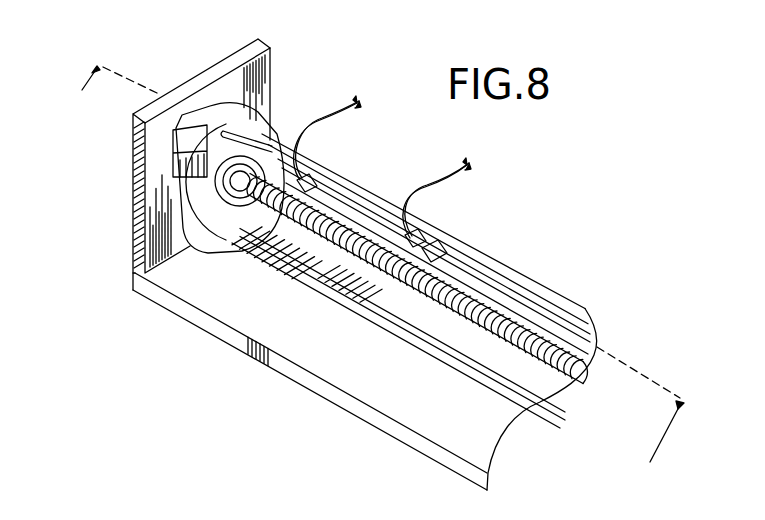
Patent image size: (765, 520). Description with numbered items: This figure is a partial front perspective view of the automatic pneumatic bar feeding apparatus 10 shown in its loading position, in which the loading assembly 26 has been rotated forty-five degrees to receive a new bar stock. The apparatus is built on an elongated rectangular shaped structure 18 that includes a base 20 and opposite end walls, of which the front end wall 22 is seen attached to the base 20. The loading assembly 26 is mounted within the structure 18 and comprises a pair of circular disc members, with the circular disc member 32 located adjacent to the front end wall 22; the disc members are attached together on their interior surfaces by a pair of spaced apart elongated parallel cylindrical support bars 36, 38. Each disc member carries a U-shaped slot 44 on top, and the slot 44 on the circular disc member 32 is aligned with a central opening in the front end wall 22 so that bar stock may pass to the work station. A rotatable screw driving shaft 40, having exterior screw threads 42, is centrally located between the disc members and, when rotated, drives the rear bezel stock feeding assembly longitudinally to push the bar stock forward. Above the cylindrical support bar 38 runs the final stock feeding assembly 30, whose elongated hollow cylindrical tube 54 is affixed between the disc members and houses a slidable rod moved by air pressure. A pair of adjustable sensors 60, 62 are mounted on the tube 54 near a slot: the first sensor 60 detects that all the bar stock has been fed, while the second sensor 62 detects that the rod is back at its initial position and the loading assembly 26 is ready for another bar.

The bar feeding apparatus 10 is at (365, 279).
The elongated rectangular shaped structure 18 is at (131, 292).
The base 20 is at (410, 417).
The front end wall 22 is at (143, 137).
The loading assembly 26 is at (200, 253).
The final stock feeding assembly 30 is at (468, 266).
The circular disc member 32 is at (217, 110).
The cylindrical support bar 36 is at (503, 393).
The cylindrical support bar 38 is at (560, 303).
The screw driving shaft 40 is at (565, 365).
The exterior screw threads 42 is at (380, 292).
The U-shaped slot 44 is at (187, 140).
The elongated hollow cylindrical tube 54 is at (523, 297).
The first sensor 60 is at (310, 177).
The second sensor 62 is at (427, 257).